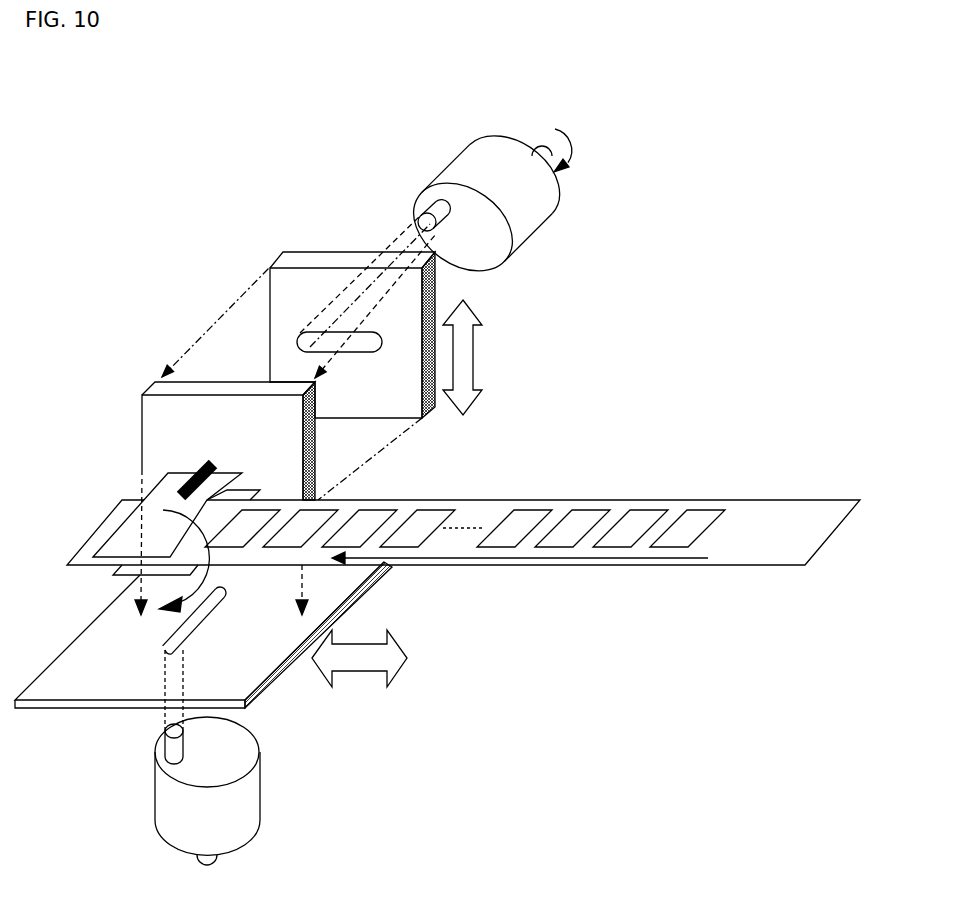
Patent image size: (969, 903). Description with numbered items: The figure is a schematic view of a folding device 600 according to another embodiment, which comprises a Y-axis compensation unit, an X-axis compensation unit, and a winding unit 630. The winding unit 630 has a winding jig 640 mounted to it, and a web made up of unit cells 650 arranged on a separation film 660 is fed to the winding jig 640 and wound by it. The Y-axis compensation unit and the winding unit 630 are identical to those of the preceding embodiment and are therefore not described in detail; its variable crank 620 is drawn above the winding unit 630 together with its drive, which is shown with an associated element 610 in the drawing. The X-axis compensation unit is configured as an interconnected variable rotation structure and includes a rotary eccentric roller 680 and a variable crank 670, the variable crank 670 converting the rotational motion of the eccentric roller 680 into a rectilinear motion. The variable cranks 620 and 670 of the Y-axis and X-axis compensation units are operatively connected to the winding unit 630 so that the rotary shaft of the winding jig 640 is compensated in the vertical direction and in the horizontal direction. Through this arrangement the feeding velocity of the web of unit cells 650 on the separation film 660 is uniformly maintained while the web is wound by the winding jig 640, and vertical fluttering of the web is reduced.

The folding device 600 is at (100, 120).
The light source 610 is at (483, 150).
The variable crank 620 is at (338, 262).
The winding unit 630 is at (162, 407).
The winding jig 640 is at (142, 510).
The unit cells 650 is at (522, 520).
The separation film 660 is at (757, 515).
The variable crank 670 is at (82, 647).
The eccentric roller 680 is at (248, 793).